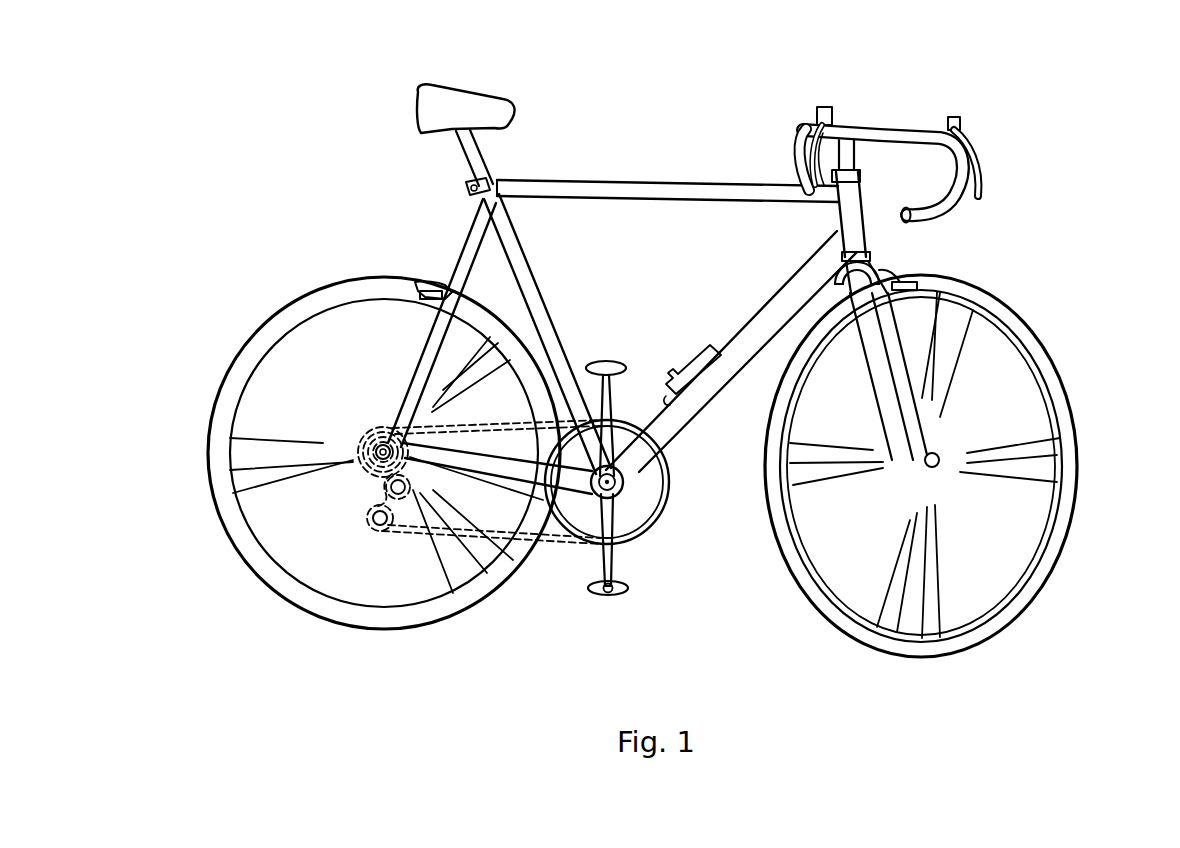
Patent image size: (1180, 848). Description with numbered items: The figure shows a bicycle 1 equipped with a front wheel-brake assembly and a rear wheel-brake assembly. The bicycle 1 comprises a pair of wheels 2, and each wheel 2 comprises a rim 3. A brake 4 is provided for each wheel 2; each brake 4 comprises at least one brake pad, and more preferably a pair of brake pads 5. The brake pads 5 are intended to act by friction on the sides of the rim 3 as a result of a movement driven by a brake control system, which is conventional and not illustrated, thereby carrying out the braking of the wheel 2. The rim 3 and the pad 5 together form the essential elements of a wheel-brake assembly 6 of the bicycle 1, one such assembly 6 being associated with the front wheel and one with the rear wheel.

The bicycle 1 is at (622, 112).
The wheel 2 is at (290, 268).
The rim 3 is at (248, 353).
The brake 4 is at (438, 250).
The brake pad 5 is at (408, 283).
The wheel-brake assembly 6 is at (686, 183).